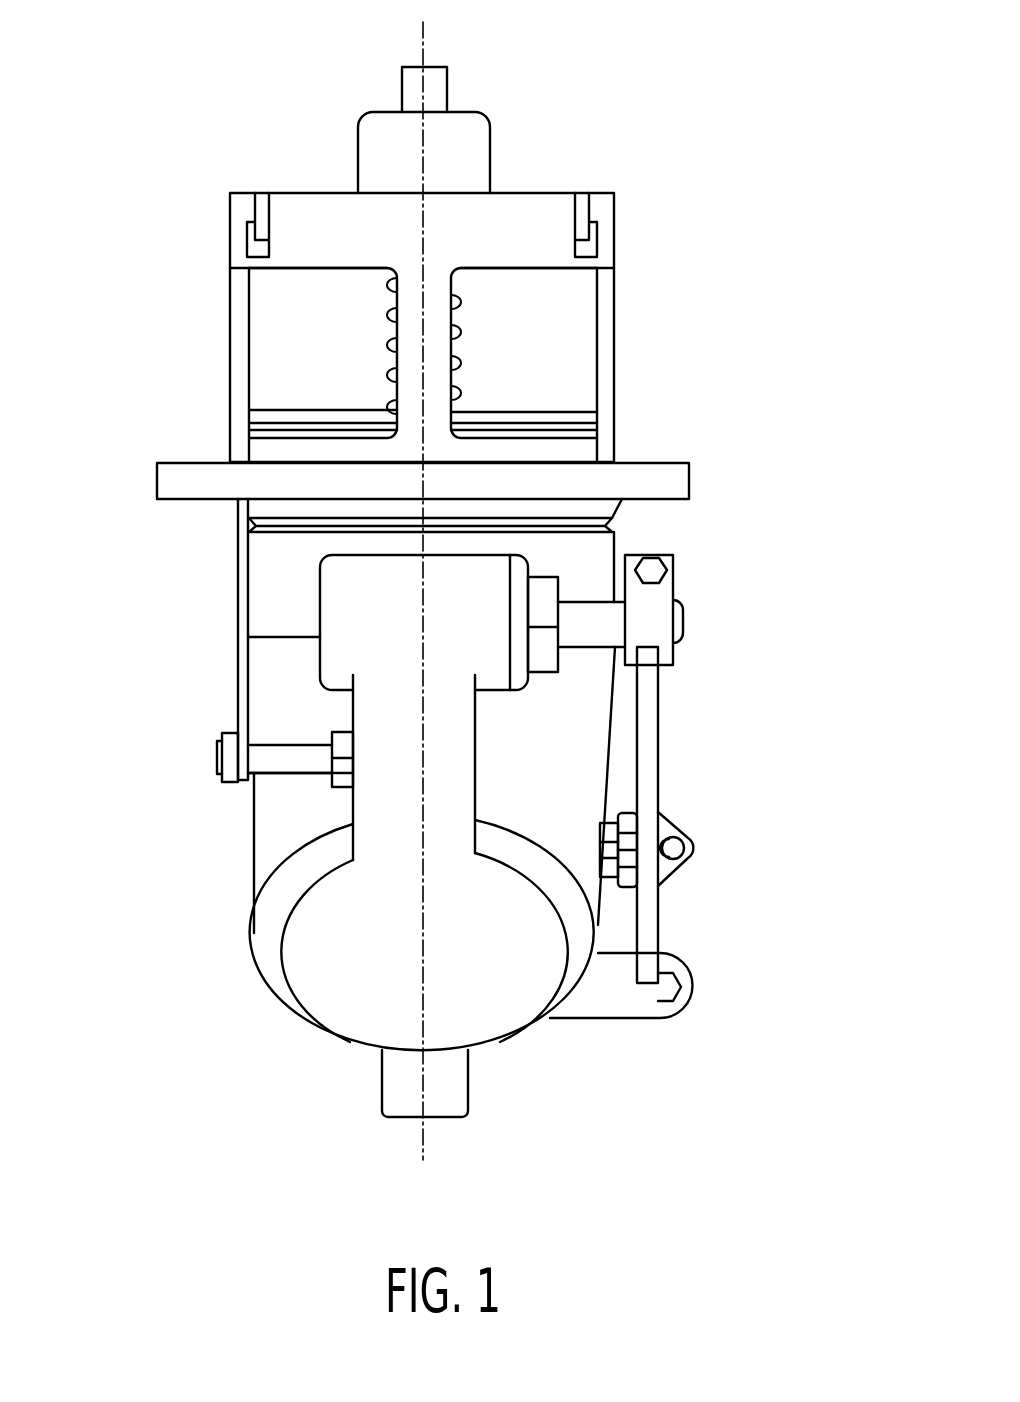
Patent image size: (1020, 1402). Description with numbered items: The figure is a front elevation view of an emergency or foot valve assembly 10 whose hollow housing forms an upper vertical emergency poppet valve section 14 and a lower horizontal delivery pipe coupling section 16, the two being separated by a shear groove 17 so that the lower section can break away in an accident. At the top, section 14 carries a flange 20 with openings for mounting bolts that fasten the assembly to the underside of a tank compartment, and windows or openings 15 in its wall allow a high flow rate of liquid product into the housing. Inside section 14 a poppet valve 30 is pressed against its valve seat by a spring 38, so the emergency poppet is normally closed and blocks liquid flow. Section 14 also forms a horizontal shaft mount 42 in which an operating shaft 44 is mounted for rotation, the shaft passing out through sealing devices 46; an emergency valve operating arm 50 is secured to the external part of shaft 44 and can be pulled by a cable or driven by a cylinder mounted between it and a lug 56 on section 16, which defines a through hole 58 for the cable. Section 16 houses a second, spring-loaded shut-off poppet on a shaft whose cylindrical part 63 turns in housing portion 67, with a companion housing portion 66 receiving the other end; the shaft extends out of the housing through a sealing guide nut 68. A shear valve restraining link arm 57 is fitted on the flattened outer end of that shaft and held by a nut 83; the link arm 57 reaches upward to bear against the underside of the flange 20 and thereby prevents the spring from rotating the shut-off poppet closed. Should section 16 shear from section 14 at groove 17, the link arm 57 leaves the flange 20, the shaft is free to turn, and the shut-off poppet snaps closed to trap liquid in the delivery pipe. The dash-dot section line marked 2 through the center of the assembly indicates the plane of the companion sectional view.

The section line 2- 2 is at (423, 22).
The emergency or foot valve assembly 10 is at (667, 107).
The upper vertical emergency poppet valve section 14 is at (618, 295).
The windows or openings 15 is at (571, 360).
The horizontal delivery pipe coupling section 16 is at (278, 844).
The shear groove 17 is at (613, 518).
The flange 20 is at (677, 482).
The poppet valve 30 is at (280, 412).
The spring 38 is at (385, 318).
The horizontal shaft mount 42 is at (520, 677).
The operating shaft 44 is at (592, 633).
The sealing devices 46 is at (542, 660).
The emergency valve operating arm 50 is at (658, 775).
The lug 56 is at (623, 1008).
The shear valve restraining link arm 57 is at (243, 508).
The through hole 58 is at (672, 983).
The cylindrical part 63 is at (288, 750).
The housing portion 66 is at (478, 768).
The housing portion 67 is at (355, 758).
The sealing guide nut 68 is at (338, 733).
The nut 83 is at (232, 733).